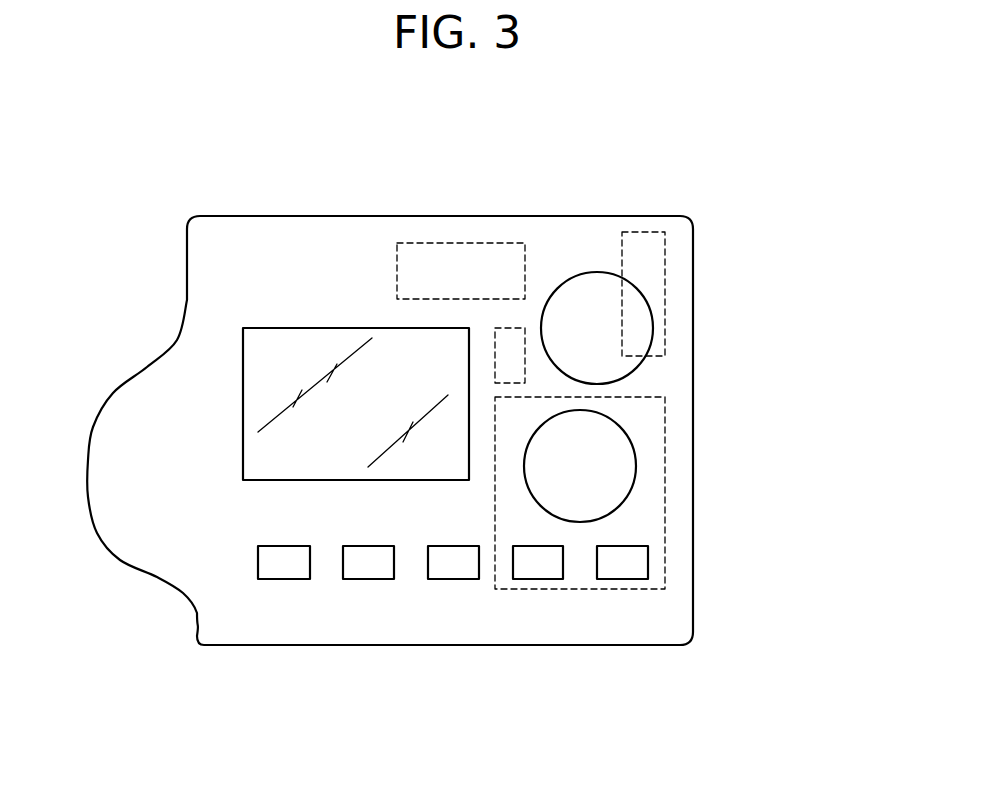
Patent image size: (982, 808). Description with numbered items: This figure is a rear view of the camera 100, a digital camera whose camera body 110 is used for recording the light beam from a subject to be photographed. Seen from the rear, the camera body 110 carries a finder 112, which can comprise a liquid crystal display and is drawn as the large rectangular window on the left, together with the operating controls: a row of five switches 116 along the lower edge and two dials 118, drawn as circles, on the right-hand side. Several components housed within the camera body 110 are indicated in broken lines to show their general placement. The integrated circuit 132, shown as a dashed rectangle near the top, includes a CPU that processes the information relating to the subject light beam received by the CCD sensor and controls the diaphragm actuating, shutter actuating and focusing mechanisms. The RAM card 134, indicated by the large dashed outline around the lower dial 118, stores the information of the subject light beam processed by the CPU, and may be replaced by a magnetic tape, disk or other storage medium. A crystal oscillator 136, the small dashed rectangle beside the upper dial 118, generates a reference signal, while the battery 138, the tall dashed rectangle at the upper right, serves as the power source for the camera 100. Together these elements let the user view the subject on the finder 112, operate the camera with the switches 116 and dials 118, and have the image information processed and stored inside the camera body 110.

The camera 100 is at (735, 296).
The camera body 110 is at (505, 214).
The finder 112 is at (277, 376).
The switches 116 is at (625, 567).
The dials 118 is at (593, 300).
The integrated circuit 132 is at (446, 265).
The RAM card 134 is at (642, 518).
The crystal oscillator 136 is at (511, 343).
The battery 138 is at (647, 247).